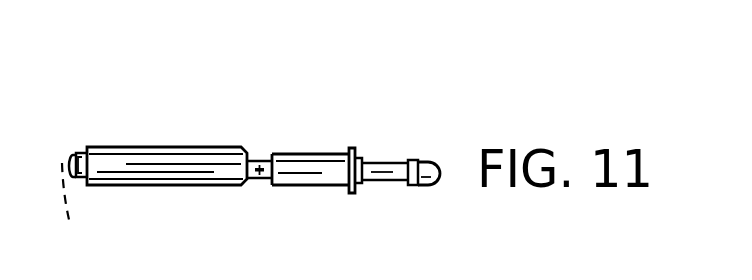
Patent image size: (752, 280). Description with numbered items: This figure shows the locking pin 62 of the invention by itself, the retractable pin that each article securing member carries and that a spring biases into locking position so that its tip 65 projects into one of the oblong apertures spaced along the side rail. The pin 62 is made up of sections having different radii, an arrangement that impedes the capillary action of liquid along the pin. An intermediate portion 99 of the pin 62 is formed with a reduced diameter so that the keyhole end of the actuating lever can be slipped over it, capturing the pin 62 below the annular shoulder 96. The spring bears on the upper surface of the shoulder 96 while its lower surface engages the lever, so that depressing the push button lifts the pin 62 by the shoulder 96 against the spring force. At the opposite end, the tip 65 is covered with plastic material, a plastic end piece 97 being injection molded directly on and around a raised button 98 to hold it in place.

The locking pin 62 is at (198, 123).
The tip 65 is at (102, 164).
The annular shoulder 96 is at (353, 156).
The plastic end piece 97 is at (69, 213).
The raised button 98 is at (69, 151).
The reduced diameter portion 99 is at (262, 176).